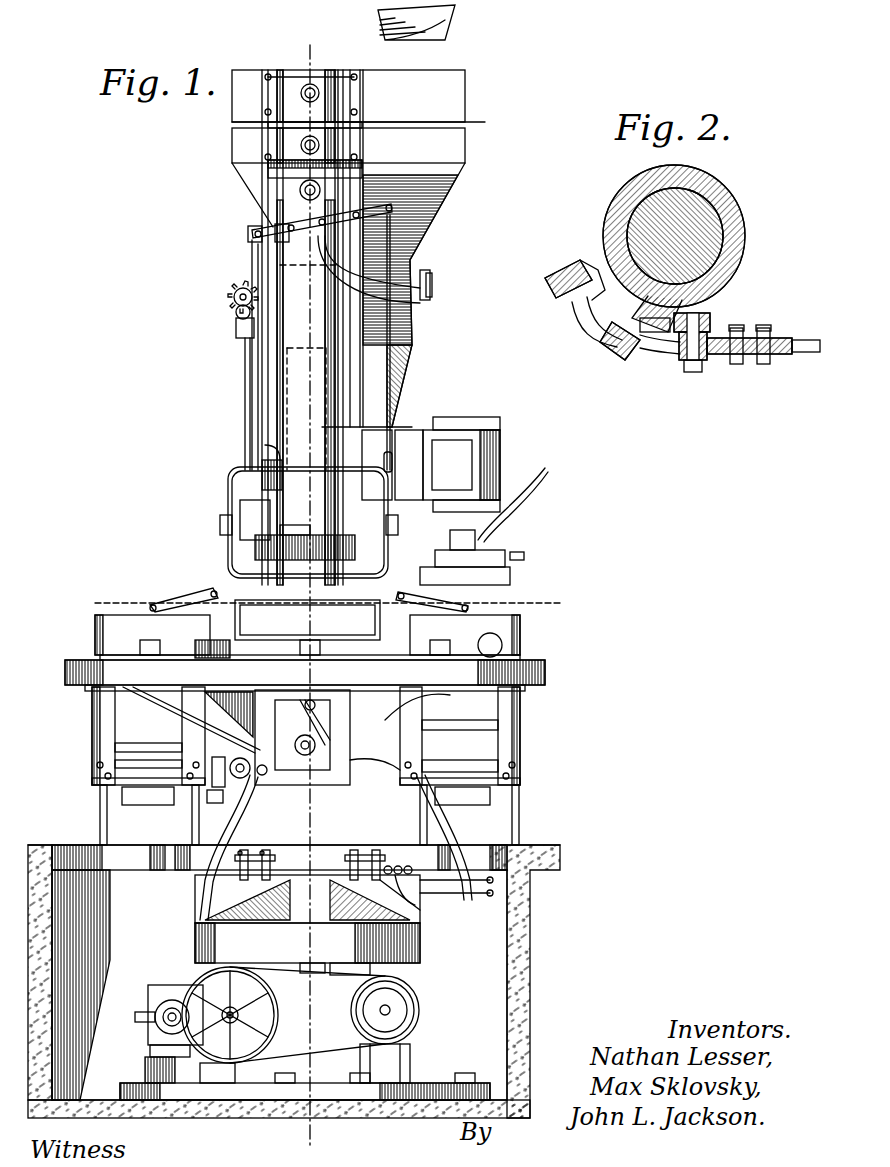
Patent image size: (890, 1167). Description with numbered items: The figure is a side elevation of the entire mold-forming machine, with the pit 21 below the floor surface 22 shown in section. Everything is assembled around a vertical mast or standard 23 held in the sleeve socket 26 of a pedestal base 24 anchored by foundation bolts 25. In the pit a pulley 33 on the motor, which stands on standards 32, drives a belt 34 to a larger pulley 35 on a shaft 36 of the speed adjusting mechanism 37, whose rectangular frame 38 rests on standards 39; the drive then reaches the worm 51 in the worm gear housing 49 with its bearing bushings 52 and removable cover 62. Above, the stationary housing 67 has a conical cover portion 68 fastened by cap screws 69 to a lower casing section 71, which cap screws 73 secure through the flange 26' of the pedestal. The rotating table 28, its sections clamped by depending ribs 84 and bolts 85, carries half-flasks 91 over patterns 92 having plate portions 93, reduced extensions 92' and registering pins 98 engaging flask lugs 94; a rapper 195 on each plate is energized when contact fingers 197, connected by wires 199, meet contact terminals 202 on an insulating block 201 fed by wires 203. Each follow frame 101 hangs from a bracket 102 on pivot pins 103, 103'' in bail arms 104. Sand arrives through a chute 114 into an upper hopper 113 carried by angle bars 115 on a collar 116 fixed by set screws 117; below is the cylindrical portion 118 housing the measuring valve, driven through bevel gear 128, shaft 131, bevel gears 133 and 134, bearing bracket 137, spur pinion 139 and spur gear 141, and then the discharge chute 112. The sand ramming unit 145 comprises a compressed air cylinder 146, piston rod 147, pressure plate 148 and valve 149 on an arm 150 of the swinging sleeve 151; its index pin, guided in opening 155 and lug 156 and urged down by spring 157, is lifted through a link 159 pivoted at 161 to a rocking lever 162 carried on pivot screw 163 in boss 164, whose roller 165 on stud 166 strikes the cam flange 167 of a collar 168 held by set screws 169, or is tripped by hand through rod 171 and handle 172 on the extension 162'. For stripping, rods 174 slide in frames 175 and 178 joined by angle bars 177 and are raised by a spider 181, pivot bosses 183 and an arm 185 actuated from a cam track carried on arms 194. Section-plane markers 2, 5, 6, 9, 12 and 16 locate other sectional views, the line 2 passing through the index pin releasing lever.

In FIG. 1, the section line 6- 6 is at (325, 55).
In FIG. 1, the chute 114 is at (378, 25).
In FIG. 1, the set screws 117 is at (300, 93).
In FIG. 1, the upper hopper 113 is at (470, 124).
In FIG. 1, the block or collar 116 is at (270, 130).
In FIG. 1, the vertically extending angle bars 115 is at (300, 145).
In FIG. 1, the set screws 169 is at (318, 188).
In FIG. 1, the extending portion of lever 162' is at (459, 181).
In FIG. 2, the extending portion of lever 162' is at (763, 334).
In FIG. 1, the curved cam flange 167 is at (285, 225).
In FIG. 1, the collar 168 is at (255, 232).
In FIG. 1, the pivot screw 163 is at (278, 233).
In FIG. 2, the pivot screw 163 is at (620, 355).
In FIG. 1, the pivotal connection 161 is at (252, 244).
In FIG. 2, the pivotal connection 161 is at (560, 300).
In FIG. 1, the line 2— 2 is at (245, 233).
In FIG. 1, the large bevel gear 128 is at (240, 287).
In FIG. 1, the cylindrical portion 118 is at (425, 270).
In FIG. 1, the shaft 131 is at (235, 298).
In FIG. 1, the stud 166 is at (430, 290).
In FIG. 2, the stud 166 is at (694, 372).
In FIG. 1, the roller 165 is at (395, 300).
In FIG. 2, the roller 165 is at (712, 318).
In FIG. 1, the bevel gear 133 is at (233, 305).
In FIG. 1, the bevel gear 134 is at (237, 325).
In FIG. 1, the depending rod 171 is at (392, 330).
In FIG. 1, the bearing bracket 137 is at (240, 340).
In FIG. 1, the opening 155 is at (255, 355).
In FIG. 1, the rocking lever 162 is at (337, 269).
In FIG. 2, the rocking lever 162 is at (608, 325).
In FIG. 1, the sand chute 112 is at (408, 385).
In FIG. 1, the link 159 is at (265, 378).
In FIG. 2, the link 159 is at (588, 255).
In FIG. 1, the sleeve 151 is at (290, 395).
In FIG. 2, the sleeve 151 is at (610, 212).
In FIG. 1, the bracket or arm 150 is at (412, 425).
In FIG. 1, the compression spring 157 is at (270, 450).
In FIG. 1, the lug 156 is at (268, 465).
In FIG. 1, the compressed air cylinder 146 is at (495, 445).
In FIG. 1, the follow frame 101 is at (235, 480).
In FIG. 1, the handle 172 is at (392, 462).
In FIG. 1, the sand ramming unit 145 is at (500, 475).
In FIG. 1, the pivot pins 103 is at (316, 537).
In FIG. 1, the arms of yoke or bail 104 is at (230, 530).
In FIG. 1, the piston rod 147 is at (500, 520).
In FIG. 1, the valve 149 is at (490, 545).
In FIG. 1, the spur pinion 139 is at (245, 540).
In FIG. 1, the section line 9- 9 is at (565, 536).
In FIG. 1, the pressure board or plate 148 is at (510, 572).
In FIG. 1, the spur gear 141 is at (275, 555).
In FIG. 1, the bracket 102 is at (195, 595).
In FIG. 1, the flasks or half-flasks 91 is at (97, 625).
In FIG. 1, the post 103'' is at (312, 622).
In FIG. 1, the vibrator or rapper 195 is at (575, 630).
In FIG. 1, the reduced pattern extensions 92' is at (307, 620).
In FIG. 1, the patterns or pattern sections 92 is at (325, 628).
In FIG. 1, the lugs 94 is at (281, 635).
In FIG. 1, the plate portion 93 is at (75, 660).
In FIG. 1, the dowel or registering pin 98 is at (400, 646).
In FIG. 1, the rotating table 28 is at (548, 672).
In FIG. 1, the section line 16- 16 is at (302, 671).
In FIG. 1, the rectangular plate or frame 175 is at (60, 705).
In FIG. 1, the depending ribs 84 is at (191, 714).
In FIG. 1, the bolts 85 is at (200, 715).
In FIG. 1, the wires 199 is at (417, 703).
In FIG. 1, the horizontal pivot bosses 183 is at (548, 745).
In FIG. 1, the angle plates or bars 177 is at (115, 710).
In FIG. 1, the spider 181 is at (125, 745).
In FIG. 1, the lower plate or frame 178 is at (125, 780).
In FIG. 1, the rods 174 is at (97, 825).
In FIG. 1, the arm 185 is at (150, 810).
In FIG. 1, the arms 194 is at (160, 887).
In FIG. 1, the floor surface 22 is at (500, 850).
In FIG. 1, the contact fingers 197 is at (302, 884).
In FIG. 1, the conical cover portion 68 is at (215, 905).
In FIG. 1, the stationary housing 67 is at (192, 925).
In FIG. 1, the cap screws 69 is at (300, 915).
In FIG. 1, the wires 203 is at (410, 895).
In FIG. 1, the contact terminals 202 is at (493, 886).
In FIG. 1, the insulating block 201 is at (435, 914).
In FIG. 1, the section line 12- 12 is at (590, 930).
In FIG. 1, the removable cover 62 is at (170, 990).
In FIG. 1, the lower casing section 71 is at (290, 943).
In FIG. 1, the cap screws 73 is at (318, 955).
In FIG. 1, the flange 26' is at (392, 963).
In FIG. 1, the removable bearing bushings 52 is at (160, 985).
In FIG. 1, the worm 51 is at (400, 998).
In FIG. 1, the pit 21 is at (515, 980).
In FIG. 1, the worm gear housing 49 is at (160, 998).
In FIG. 1, the rectangular frame 38 is at (135, 1017).
In FIG. 1, the pulley 33 is at (390, 1012).
In FIG. 1, the speed adjusting mechanism 37 is at (165, 1030).
In FIG. 1, the shaft 36 is at (155, 1050).
In FIG. 1, the foundation bolts 25 is at (390, 1028).
In FIG. 1, the pedestal base 24 is at (470, 1073).
In FIG. 1, the pulley 35 is at (225, 1065).
In FIG. 1, the standards 39 is at (150, 1065).
In FIG. 1, the belt 34 is at (285, 1085).
In FIG. 1, the section line 5- 5 is at (330, 1140).
In FIG. 1, the vertical sleeve socket 26 is at (346, 1113).
In FIG. 1, the standards 32 is at (380, 1085).
In FIG. 2, the vertical mast or spindle 23 is at (705, 257).
In FIG. 2, the boss 164 is at (645, 318).